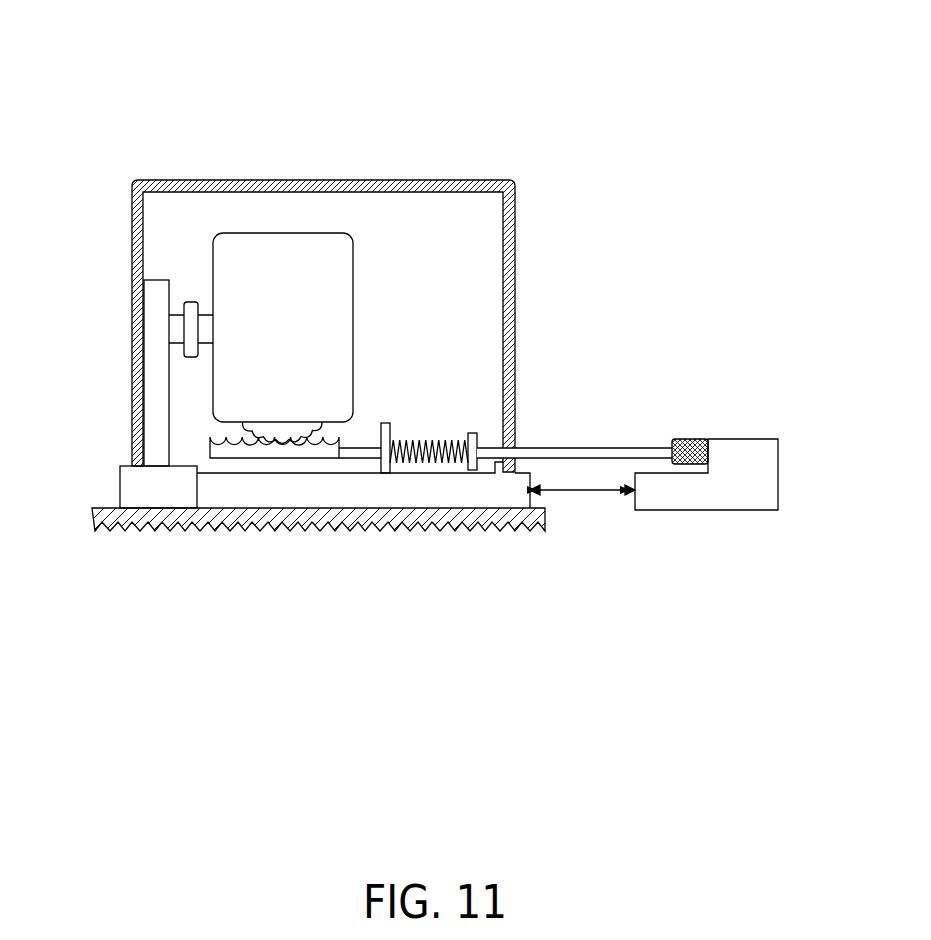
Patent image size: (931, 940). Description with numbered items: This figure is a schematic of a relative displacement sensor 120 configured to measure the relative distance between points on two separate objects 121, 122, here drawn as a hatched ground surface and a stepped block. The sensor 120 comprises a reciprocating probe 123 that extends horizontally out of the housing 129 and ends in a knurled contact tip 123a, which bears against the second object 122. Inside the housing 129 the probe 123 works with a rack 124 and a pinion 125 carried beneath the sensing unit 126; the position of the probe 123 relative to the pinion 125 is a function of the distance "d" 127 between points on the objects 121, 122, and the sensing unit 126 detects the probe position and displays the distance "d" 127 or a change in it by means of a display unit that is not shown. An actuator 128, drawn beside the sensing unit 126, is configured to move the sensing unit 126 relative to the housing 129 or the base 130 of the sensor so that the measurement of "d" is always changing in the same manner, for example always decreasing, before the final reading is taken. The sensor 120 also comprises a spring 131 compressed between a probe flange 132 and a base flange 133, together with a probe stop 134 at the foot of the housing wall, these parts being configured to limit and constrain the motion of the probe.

The relative displacement sensor 120 is at (363, 77).
The object 121 is at (313, 515).
The object 122 is at (732, 458).
The reciprocating probe 123 is at (612, 445).
The knurled contact tip 123a is at (685, 433).
The rack 124 is at (252, 452).
The pinion 125 is at (323, 432).
The sensing unit 126 is at (330, 268).
The distance "d" 127 is at (602, 502).
The actuator 128 is at (192, 326).
The housing 129 is at (132, 200).
The base 130 is at (152, 493).
The spring 131 is at (428, 445).
The probe flange 132 is at (473, 432).
The base flange 133 is at (387, 475).
The probe stop 134 is at (498, 468).